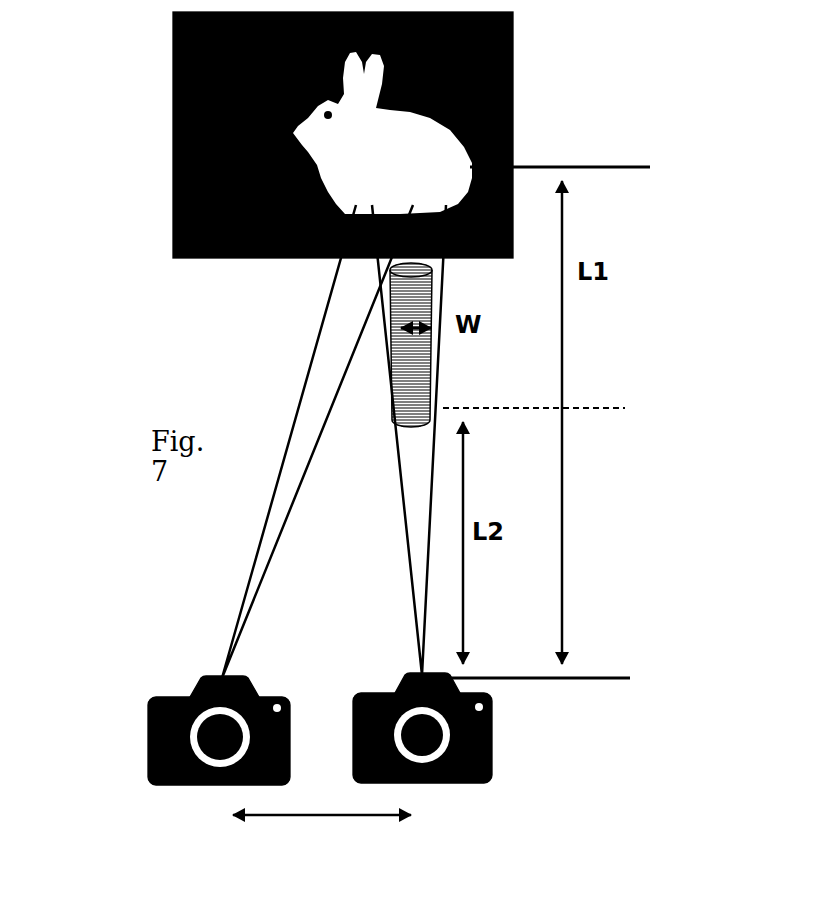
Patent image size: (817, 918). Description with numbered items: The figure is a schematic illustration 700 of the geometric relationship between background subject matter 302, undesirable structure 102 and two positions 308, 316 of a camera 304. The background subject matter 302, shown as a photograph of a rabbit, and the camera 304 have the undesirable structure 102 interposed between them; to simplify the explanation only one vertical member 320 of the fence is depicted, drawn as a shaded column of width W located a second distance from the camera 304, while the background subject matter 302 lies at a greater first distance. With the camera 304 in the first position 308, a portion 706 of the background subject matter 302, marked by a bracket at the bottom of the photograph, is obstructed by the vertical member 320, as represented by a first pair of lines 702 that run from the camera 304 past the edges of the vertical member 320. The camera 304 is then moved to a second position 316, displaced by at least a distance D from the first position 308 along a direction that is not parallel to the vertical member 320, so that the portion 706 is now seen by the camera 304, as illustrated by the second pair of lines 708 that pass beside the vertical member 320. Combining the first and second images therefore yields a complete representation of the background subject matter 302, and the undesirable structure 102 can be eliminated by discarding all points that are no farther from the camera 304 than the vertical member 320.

The background subject matter 302 is at (368, 76).
The schematic illustration 700 is at (693, 168).
The undesirable structure 102 is at (451, 345).
The vertical member 320 is at (427, 365).
The portion of the background subject matter 706 is at (407, 257).
The second pair of lines 708 is at (325, 433).
The first pair of lines 702 is at (433, 468).
The camera 304 is at (320, 743).
The second position 316 is at (135, 789).
The first position 308 is at (499, 792).